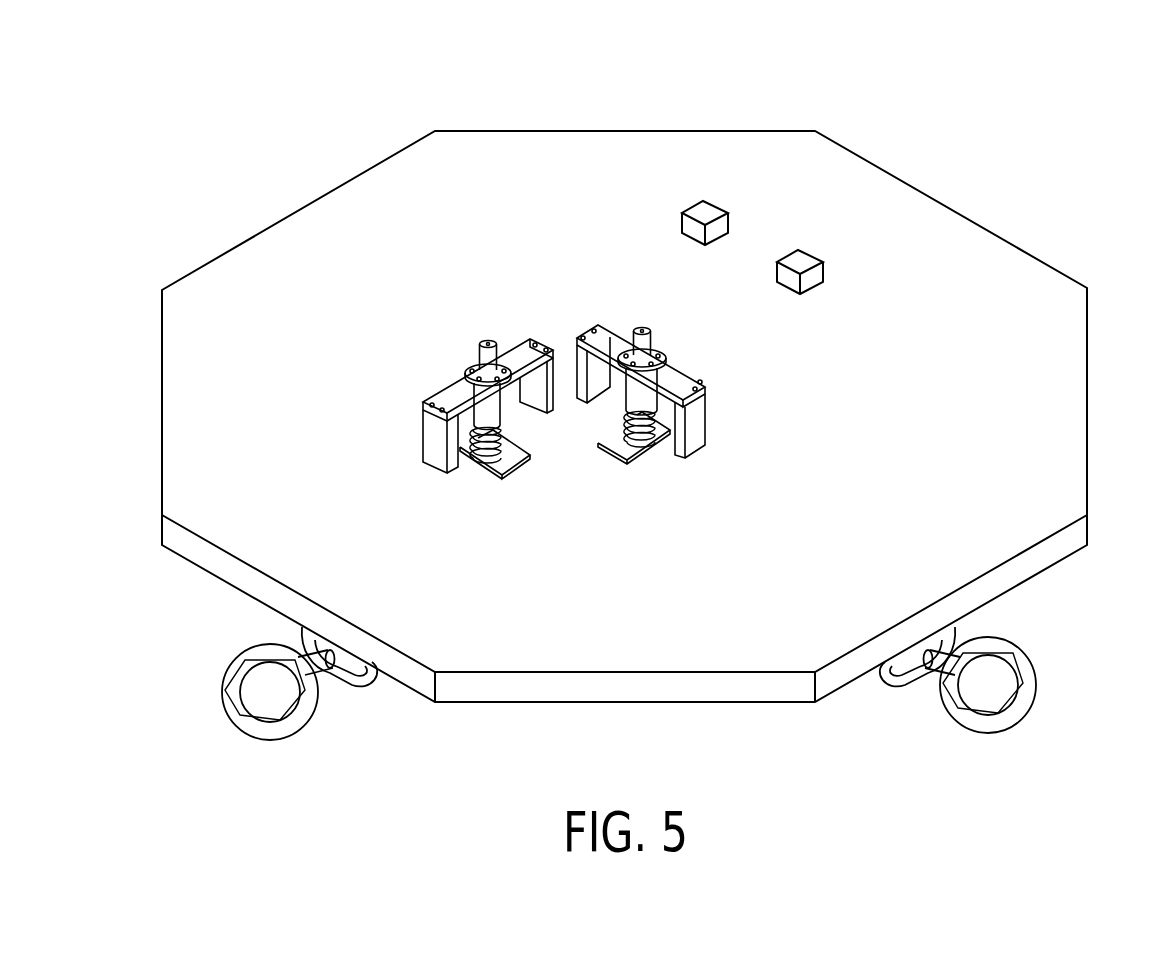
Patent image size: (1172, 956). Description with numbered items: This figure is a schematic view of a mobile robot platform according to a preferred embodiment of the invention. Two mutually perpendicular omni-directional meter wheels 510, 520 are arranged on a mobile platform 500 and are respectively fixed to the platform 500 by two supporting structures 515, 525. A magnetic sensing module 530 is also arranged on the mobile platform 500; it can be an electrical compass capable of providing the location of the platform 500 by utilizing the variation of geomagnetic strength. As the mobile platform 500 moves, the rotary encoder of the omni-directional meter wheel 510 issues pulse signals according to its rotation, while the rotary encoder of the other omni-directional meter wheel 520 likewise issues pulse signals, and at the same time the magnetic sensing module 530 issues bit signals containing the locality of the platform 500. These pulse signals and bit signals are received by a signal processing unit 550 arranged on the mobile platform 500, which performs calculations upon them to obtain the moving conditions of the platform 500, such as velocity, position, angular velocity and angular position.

The mobile platform 500 is at (295, 210).
The omni-directional meter wheel 510 is at (483, 338).
The supporting structure 515 is at (447, 393).
The omni-directional meter wheel 520 is at (640, 325).
The supporting structure 525 is at (704, 387).
The magnetic sensing module 530 is at (681, 200).
The signal processing unit 550 is at (801, 249).